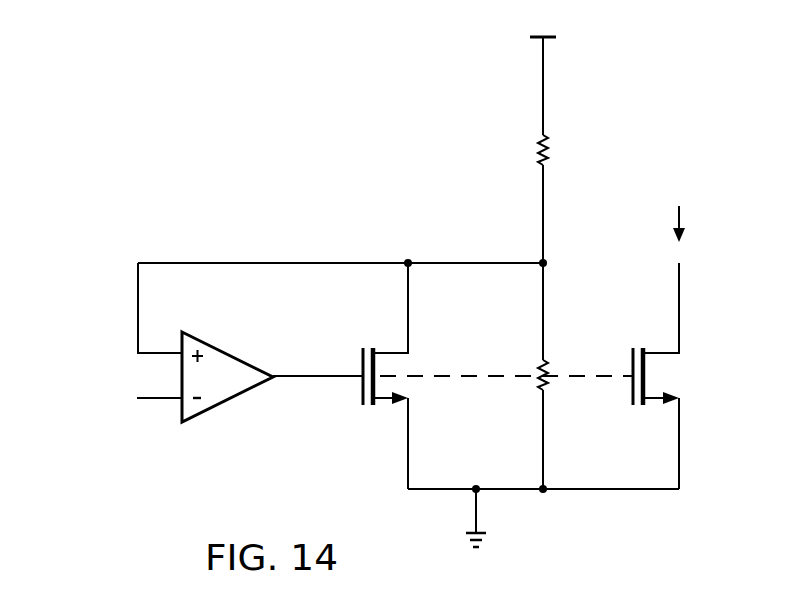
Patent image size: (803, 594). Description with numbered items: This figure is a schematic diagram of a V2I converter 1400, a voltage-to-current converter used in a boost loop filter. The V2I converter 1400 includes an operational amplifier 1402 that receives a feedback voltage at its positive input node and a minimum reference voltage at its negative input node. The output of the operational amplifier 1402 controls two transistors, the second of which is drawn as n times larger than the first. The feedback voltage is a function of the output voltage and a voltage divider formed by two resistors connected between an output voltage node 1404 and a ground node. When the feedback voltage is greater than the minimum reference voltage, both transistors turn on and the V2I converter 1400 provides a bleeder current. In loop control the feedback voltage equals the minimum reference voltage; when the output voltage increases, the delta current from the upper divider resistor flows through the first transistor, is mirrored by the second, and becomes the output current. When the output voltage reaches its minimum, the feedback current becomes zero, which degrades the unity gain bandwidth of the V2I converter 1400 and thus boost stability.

The V2I converter 1400 is at (154, 111).
The operational amplifier 1402 is at (228, 354).
The VOUT node 1404 is at (546, 38).